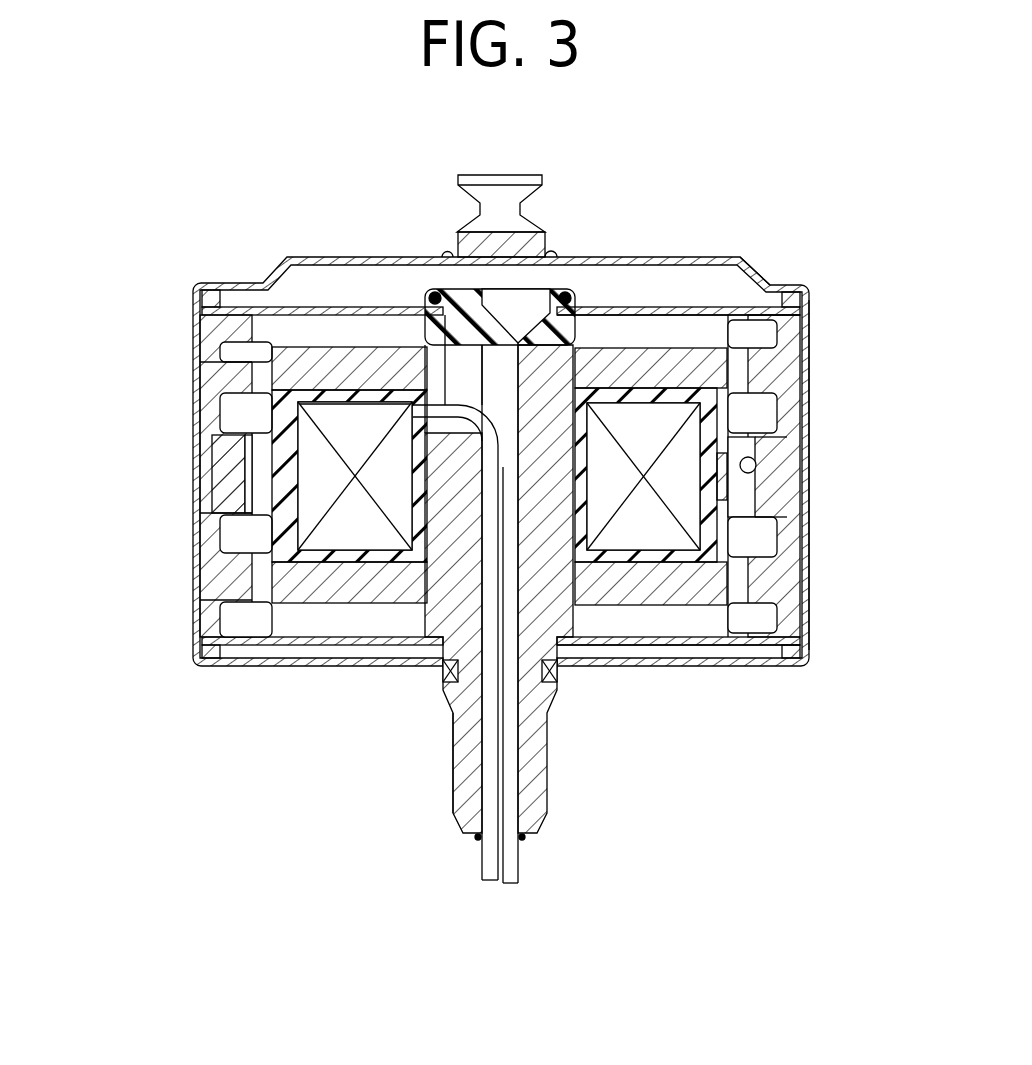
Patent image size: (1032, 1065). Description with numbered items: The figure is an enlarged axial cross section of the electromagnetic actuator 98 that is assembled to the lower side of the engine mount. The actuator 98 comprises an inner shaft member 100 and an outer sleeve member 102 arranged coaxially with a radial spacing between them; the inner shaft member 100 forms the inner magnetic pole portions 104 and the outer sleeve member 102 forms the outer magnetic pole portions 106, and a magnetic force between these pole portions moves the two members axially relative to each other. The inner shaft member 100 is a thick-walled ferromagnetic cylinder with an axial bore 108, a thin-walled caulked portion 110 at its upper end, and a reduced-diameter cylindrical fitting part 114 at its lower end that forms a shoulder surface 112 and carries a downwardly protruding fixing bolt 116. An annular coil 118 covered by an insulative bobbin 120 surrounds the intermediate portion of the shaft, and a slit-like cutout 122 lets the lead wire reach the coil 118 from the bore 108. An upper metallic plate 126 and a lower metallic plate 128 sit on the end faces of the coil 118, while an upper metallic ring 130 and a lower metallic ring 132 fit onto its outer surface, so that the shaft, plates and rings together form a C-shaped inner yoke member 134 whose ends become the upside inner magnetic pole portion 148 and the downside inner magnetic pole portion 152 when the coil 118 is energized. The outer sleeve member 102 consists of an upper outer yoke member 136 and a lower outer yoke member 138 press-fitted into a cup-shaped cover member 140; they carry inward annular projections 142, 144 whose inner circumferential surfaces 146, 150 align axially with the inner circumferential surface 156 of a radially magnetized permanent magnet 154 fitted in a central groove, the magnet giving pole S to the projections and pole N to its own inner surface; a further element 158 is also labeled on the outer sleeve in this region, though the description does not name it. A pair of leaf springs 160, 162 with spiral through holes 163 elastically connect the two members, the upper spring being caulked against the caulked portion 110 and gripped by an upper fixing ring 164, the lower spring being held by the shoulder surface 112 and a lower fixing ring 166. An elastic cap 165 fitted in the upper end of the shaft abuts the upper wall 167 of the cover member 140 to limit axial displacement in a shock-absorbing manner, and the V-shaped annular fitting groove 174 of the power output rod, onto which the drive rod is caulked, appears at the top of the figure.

The electromagnetic actuator 98 is at (770, 215).
The inner shaft member 100 is at (405, 483).
The outer sleeve member 102 is at (112, 393).
The inner magnetic pole portions 104 is at (755, 360).
The outer magnetic pole portions 106 is at (775, 360).
The bore 108 is at (460, 745).
The caulked portion 110 is at (548, 325).
The shoulder surface 112 is at (437, 650).
The cylindrical fitting part 114 is at (560, 664).
The fixing bolt 116 is at (530, 806).
The coil 118 is at (316, 512).
The bobbin 120 is at (712, 545).
The cutout 122 is at (437, 490).
The upper metallic plate 126 is at (310, 365).
The lower metallic plate 128 is at (326, 598).
The upper metallic ring 130 is at (745, 425).
The lower metallic ring 132 is at (735, 512).
The inner yoke member 134 is at (352, 616).
The upper outer yoke member 136 is at (214, 410).
The lower outer yoke member 138 is at (212, 500).
The cover member 140 is at (806, 368).
The annular projection 142 is at (234, 378).
The annular projection 144 is at (226, 596).
The inner circumferential surface 146 is at (238, 372).
The upside inner magnetic pole portion 148 is at (232, 426).
The inner circumferential surface 150 is at (250, 643).
The downside inner magnetic pole portion 152 is at (232, 590).
The permanent magnet 154 is at (202, 530).
The inner circumferential surface 156 is at (748, 473).
The spring 158 is at (777, 462).
The leaf spring 160 is at (664, 300).
The leaf spring 162 is at (640, 648).
The spiral through holes 163 is at (264, 312).
The upper fixing ring 164 is at (801, 299).
The elastic cap 165 is at (456, 320).
The lower fixing ring 166 is at (808, 654).
The upper wall 167 is at (641, 257).
The annular fitting groove 174 is at (476, 204).